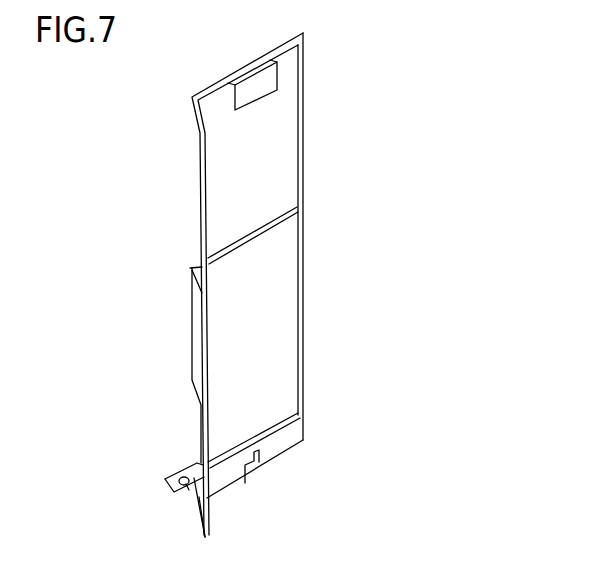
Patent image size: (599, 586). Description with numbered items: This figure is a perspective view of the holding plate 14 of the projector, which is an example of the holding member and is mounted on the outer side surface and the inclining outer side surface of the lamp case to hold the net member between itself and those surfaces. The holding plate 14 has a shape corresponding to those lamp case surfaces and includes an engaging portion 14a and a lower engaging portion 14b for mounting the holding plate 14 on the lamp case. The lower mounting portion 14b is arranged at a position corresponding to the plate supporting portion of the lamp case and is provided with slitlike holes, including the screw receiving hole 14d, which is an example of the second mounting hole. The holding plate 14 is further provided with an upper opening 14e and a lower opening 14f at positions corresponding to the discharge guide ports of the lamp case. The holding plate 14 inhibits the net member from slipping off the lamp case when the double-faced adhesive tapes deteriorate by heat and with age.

The holding plate 14 is at (332, 210).
The engaging portion 14a is at (257, 92).
The lower engaging portion 14b is at (190, 470).
The screw receiving hole 14d is at (187, 493).
The upper opening 14e is at (240, 242).
The lower opening 14f is at (252, 440).